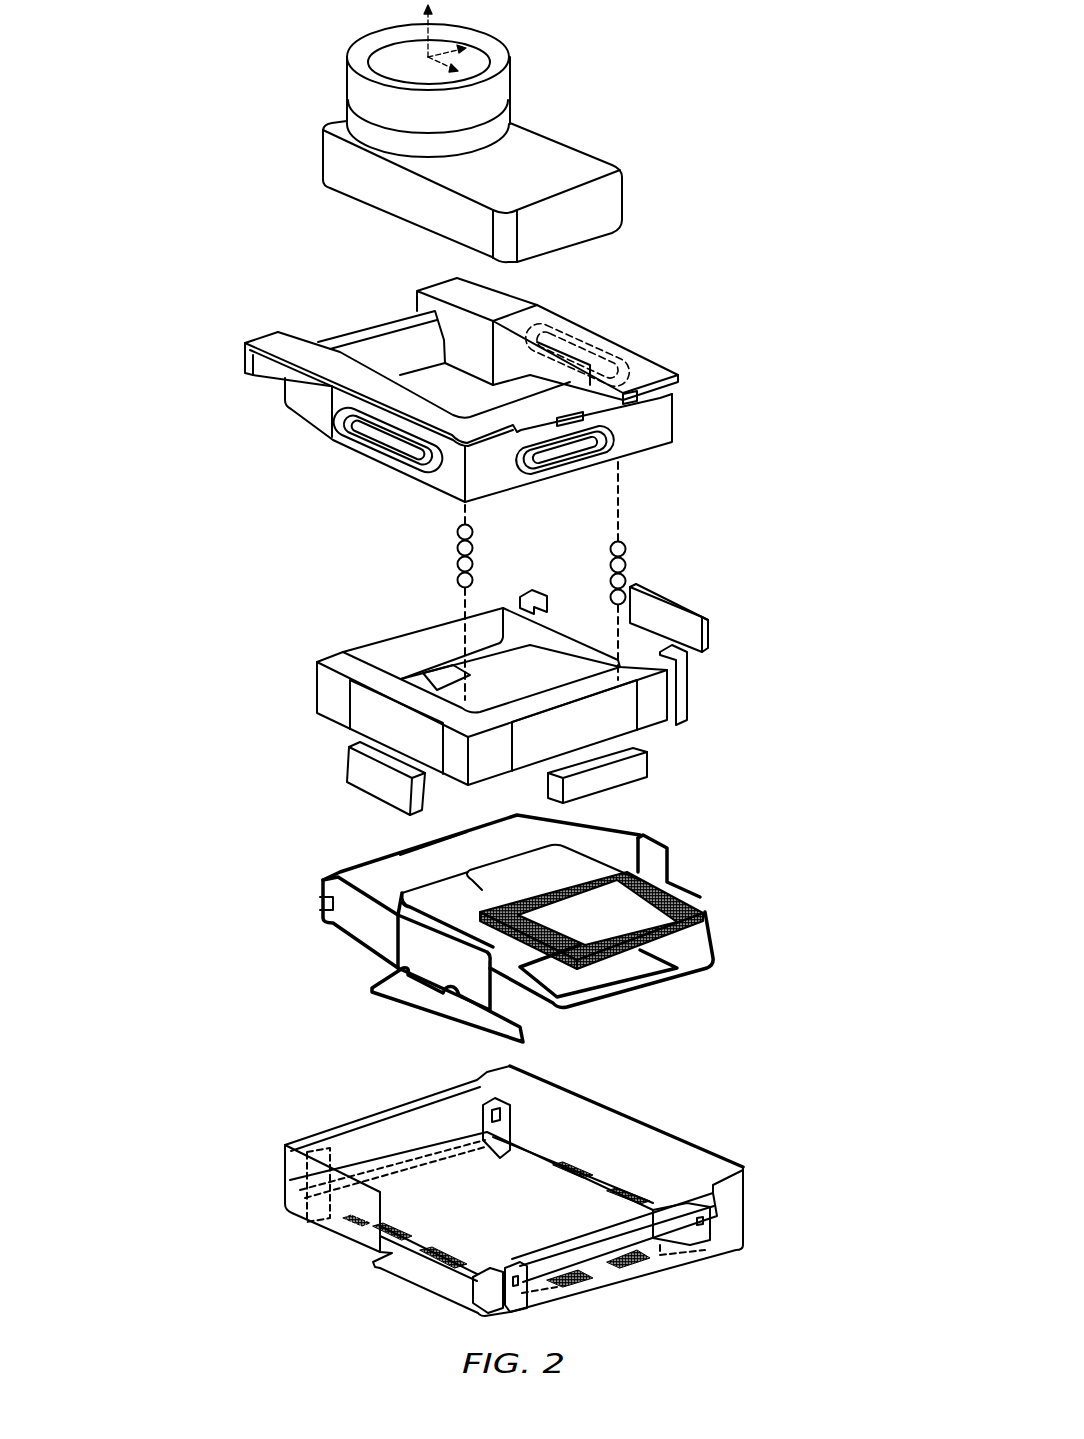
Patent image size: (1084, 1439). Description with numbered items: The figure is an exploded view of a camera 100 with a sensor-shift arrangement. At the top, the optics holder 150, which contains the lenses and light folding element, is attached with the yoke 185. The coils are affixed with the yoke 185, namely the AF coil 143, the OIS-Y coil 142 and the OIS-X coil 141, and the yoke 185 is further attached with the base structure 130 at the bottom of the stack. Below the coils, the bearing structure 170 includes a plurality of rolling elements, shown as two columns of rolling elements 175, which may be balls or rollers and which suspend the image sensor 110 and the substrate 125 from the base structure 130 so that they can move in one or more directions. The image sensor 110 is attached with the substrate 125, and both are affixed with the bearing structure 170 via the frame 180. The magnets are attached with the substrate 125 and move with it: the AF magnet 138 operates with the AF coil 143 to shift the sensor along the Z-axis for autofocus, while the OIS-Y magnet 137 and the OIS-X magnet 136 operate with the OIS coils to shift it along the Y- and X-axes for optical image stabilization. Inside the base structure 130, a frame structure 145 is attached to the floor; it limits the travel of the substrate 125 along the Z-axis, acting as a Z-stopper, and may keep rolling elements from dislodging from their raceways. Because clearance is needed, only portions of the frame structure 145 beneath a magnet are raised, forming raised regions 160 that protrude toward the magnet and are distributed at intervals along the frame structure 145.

The camera 100 is at (784, 97).
The optics holder 150 is at (323, 158).
The yoke 185 is at (245, 345).
The AF coil 143 is at (610, 352).
The OIS-Y coil 142 is at (368, 443).
The OIS-X coil 141 is at (607, 443).
The rolling elements 175 is at (627, 549).
The AF magnet 138 is at (708, 635).
The bearing structure 170 is at (317, 690).
The OIS-Y magnet 137 is at (345, 777).
The OIS-X magnet 136 is at (650, 772).
The frame 180 is at (322, 880).
The image sensor 110 is at (670, 887).
The substrate 125 is at (705, 913).
The raised regions 160 is at (573, 1158).
The frame structure 145 is at (660, 1205).
The base structure 130 is at (285, 1170).